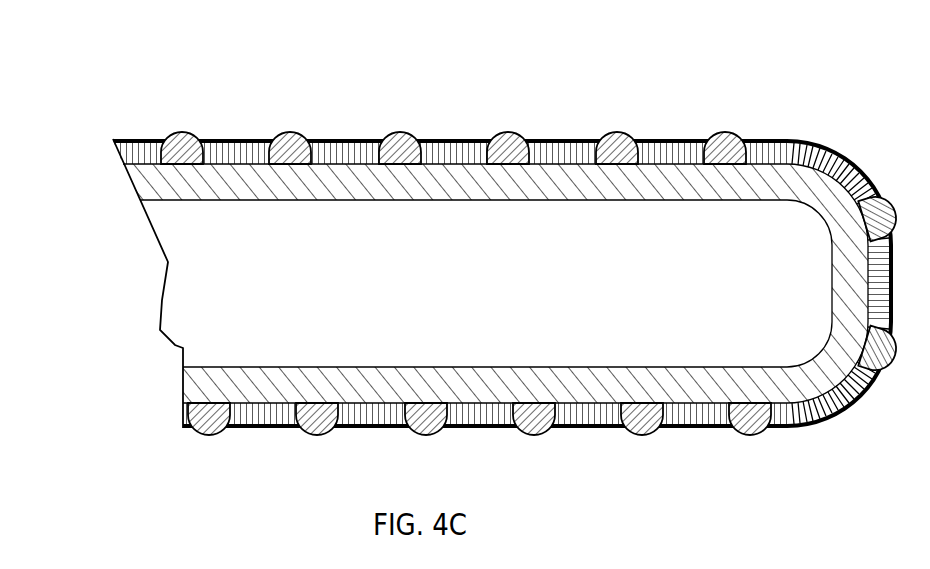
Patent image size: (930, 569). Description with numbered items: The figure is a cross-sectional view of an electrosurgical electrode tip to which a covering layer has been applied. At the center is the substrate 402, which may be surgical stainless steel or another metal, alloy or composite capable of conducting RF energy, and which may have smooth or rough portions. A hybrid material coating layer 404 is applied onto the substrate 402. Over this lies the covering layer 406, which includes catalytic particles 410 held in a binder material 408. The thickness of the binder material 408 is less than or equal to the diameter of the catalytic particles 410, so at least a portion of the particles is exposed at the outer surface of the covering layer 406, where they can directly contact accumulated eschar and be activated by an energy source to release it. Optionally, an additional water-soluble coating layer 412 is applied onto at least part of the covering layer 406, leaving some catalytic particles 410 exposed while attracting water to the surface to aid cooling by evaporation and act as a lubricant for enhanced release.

The substrate 402 is at (499, 293).
The hybrid material coating layer 404 is at (112, 185).
The covering layer 406 is at (462, 253).
The binder material 408 is at (228, 152).
The catalytic particles 410 is at (284, 137).
The additional coating layer 412 is at (137, 139).